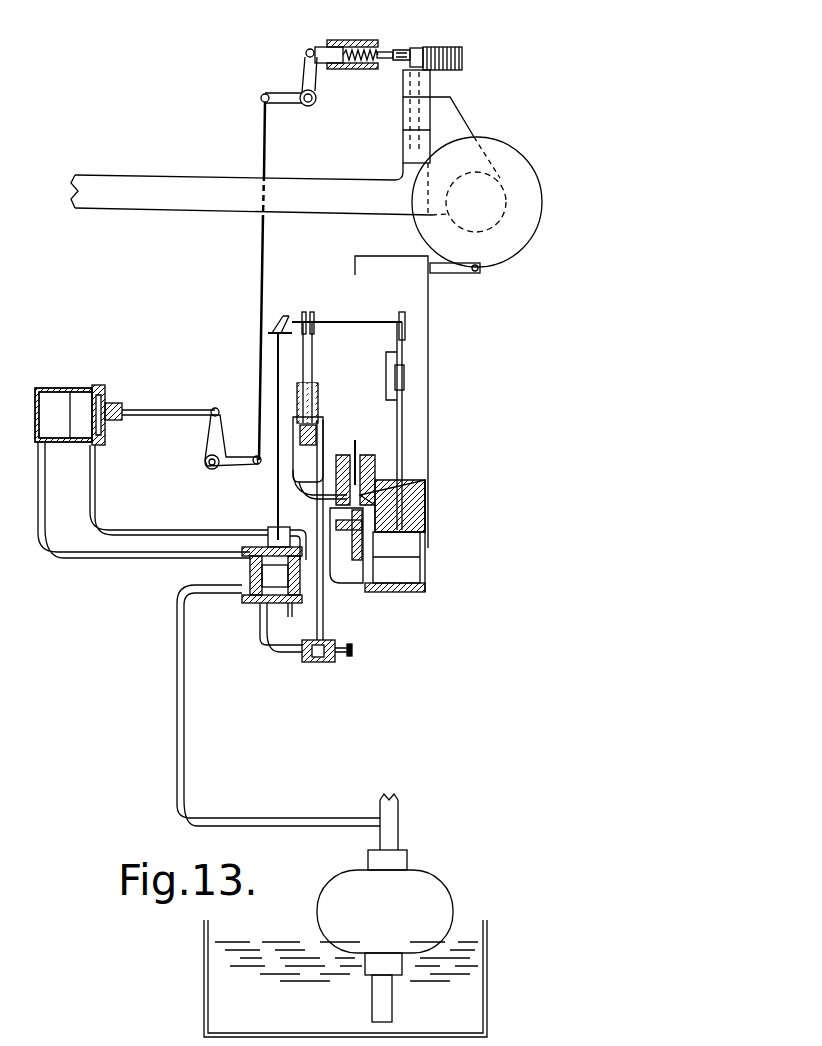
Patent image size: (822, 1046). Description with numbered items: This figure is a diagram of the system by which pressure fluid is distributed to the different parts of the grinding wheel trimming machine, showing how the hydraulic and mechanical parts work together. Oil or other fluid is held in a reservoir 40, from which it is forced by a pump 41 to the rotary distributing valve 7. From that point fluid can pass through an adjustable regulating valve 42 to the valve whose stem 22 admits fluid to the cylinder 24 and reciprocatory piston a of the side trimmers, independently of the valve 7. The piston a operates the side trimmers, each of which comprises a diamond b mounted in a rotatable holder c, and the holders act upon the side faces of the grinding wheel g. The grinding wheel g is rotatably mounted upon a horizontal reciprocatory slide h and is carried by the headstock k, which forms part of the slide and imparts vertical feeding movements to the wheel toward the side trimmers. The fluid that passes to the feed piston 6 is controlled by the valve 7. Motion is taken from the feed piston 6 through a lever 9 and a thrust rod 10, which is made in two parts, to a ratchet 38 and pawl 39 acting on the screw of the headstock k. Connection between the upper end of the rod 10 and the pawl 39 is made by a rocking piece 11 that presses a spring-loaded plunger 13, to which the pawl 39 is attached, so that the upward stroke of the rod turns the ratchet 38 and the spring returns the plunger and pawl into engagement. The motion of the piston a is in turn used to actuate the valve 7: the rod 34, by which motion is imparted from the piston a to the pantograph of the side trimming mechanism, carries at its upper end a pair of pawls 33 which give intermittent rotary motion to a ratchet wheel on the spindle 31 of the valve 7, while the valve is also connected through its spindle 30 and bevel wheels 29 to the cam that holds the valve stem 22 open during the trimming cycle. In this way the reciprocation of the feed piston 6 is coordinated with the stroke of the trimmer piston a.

The feed piston 6 is at (80, 410).
The rotary distributing valve 7 is at (270, 547).
The lever 9 is at (209, 443).
The thrust rod 10 is at (260, 324).
The rocking piece 11 is at (308, 78).
The plunger 13 is at (326, 62).
The valve stem 22 is at (308, 397).
The cylinder 24 is at (428, 565).
The bevel wheels 29 is at (286, 318).
The spindle 30 is at (277, 380).
The spindle 31 is at (370, 322).
The pawls 33 is at (405, 345).
The rod 34 is at (400, 433).
The ratchet 38 is at (450, 66).
The pawl 39 is at (412, 58).
The fluid reservoir 40 is at (445, 958).
The pump 41 is at (413, 880).
The adjustable regulating valve 42 is at (320, 660).
The reciprocatory piston a is at (405, 545).
The diamond b is at (476, 273).
The rotatable holder c is at (440, 271).
The grinding wheel g is at (503, 252).
The reciprocatory slide h is at (335, 190).
The headstock k is at (455, 130).